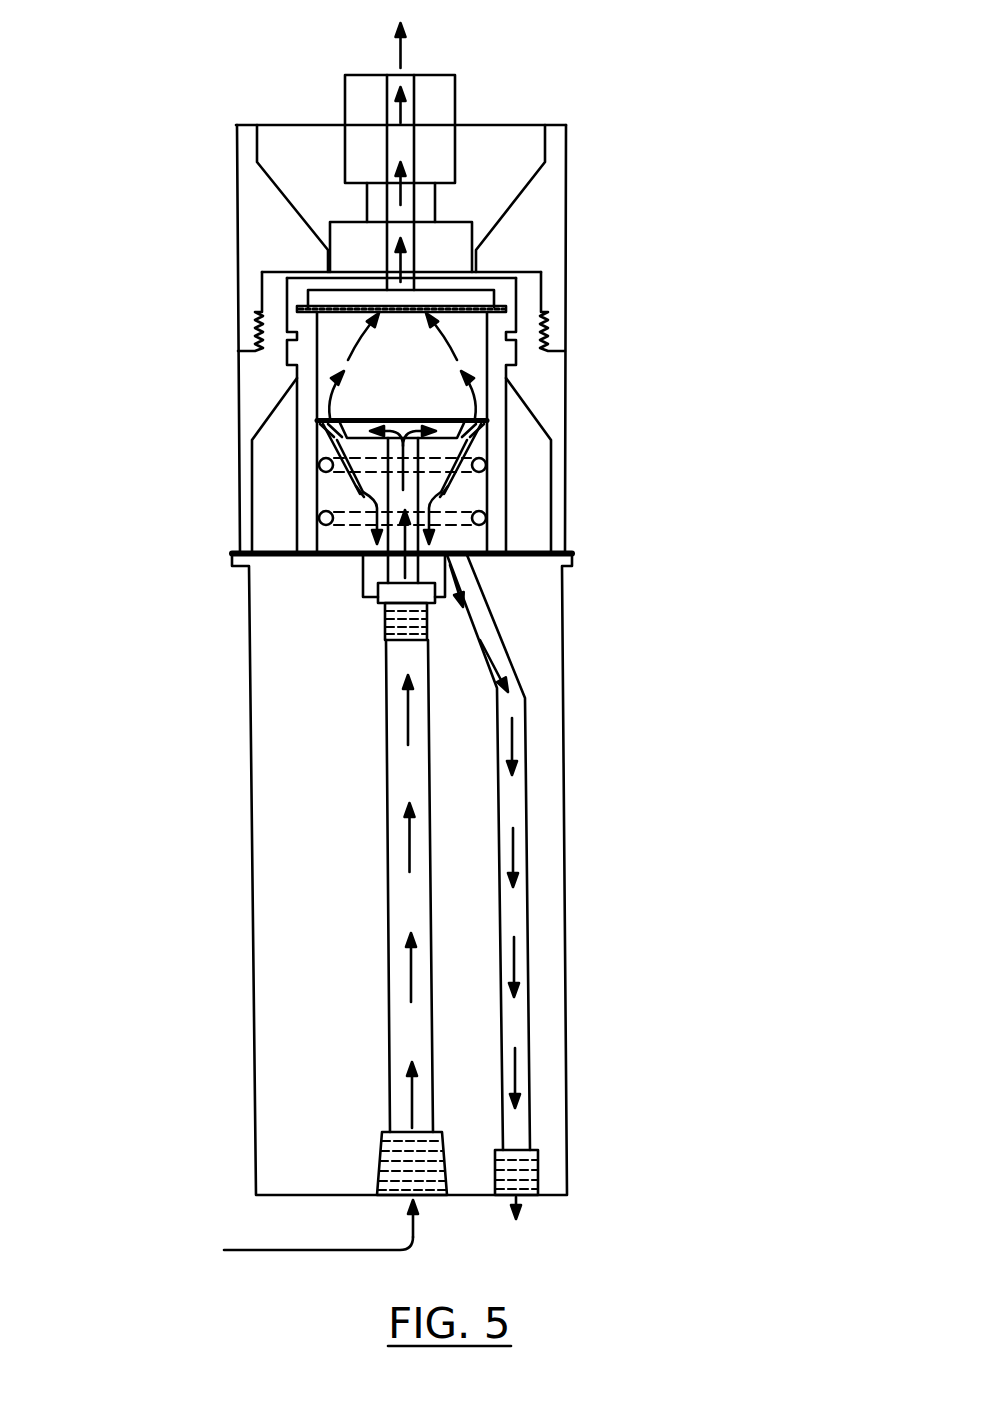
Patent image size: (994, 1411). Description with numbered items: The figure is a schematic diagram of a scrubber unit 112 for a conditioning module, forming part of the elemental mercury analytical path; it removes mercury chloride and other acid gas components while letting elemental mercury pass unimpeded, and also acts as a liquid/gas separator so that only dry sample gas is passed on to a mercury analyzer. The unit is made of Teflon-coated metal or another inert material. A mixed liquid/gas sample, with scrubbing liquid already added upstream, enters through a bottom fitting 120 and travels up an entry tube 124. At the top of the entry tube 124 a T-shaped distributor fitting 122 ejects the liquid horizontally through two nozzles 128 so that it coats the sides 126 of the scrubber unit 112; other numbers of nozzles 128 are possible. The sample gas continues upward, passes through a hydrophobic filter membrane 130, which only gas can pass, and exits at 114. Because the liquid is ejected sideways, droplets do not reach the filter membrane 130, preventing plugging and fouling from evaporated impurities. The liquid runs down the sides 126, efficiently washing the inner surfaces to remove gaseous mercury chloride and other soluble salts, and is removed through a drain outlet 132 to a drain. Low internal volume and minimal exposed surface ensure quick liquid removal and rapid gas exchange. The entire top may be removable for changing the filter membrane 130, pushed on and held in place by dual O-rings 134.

The scrubber unit 112 is at (640, 118).
The exit 114 is at (400, 53).
The bottom fitting 120 is at (262, 1250).
The T-shaped distributor fitting 122 is at (440, 445).
The entry tube 124 is at (397, 903).
The sides of scrubber unit 126 is at (359, 500).
The nozzles 128 is at (324, 428).
The hydrophobic filter membrane 130 is at (473, 320).
The drain outlet 132 is at (521, 1213).
The dual O-rings 134 is at (306, 466).